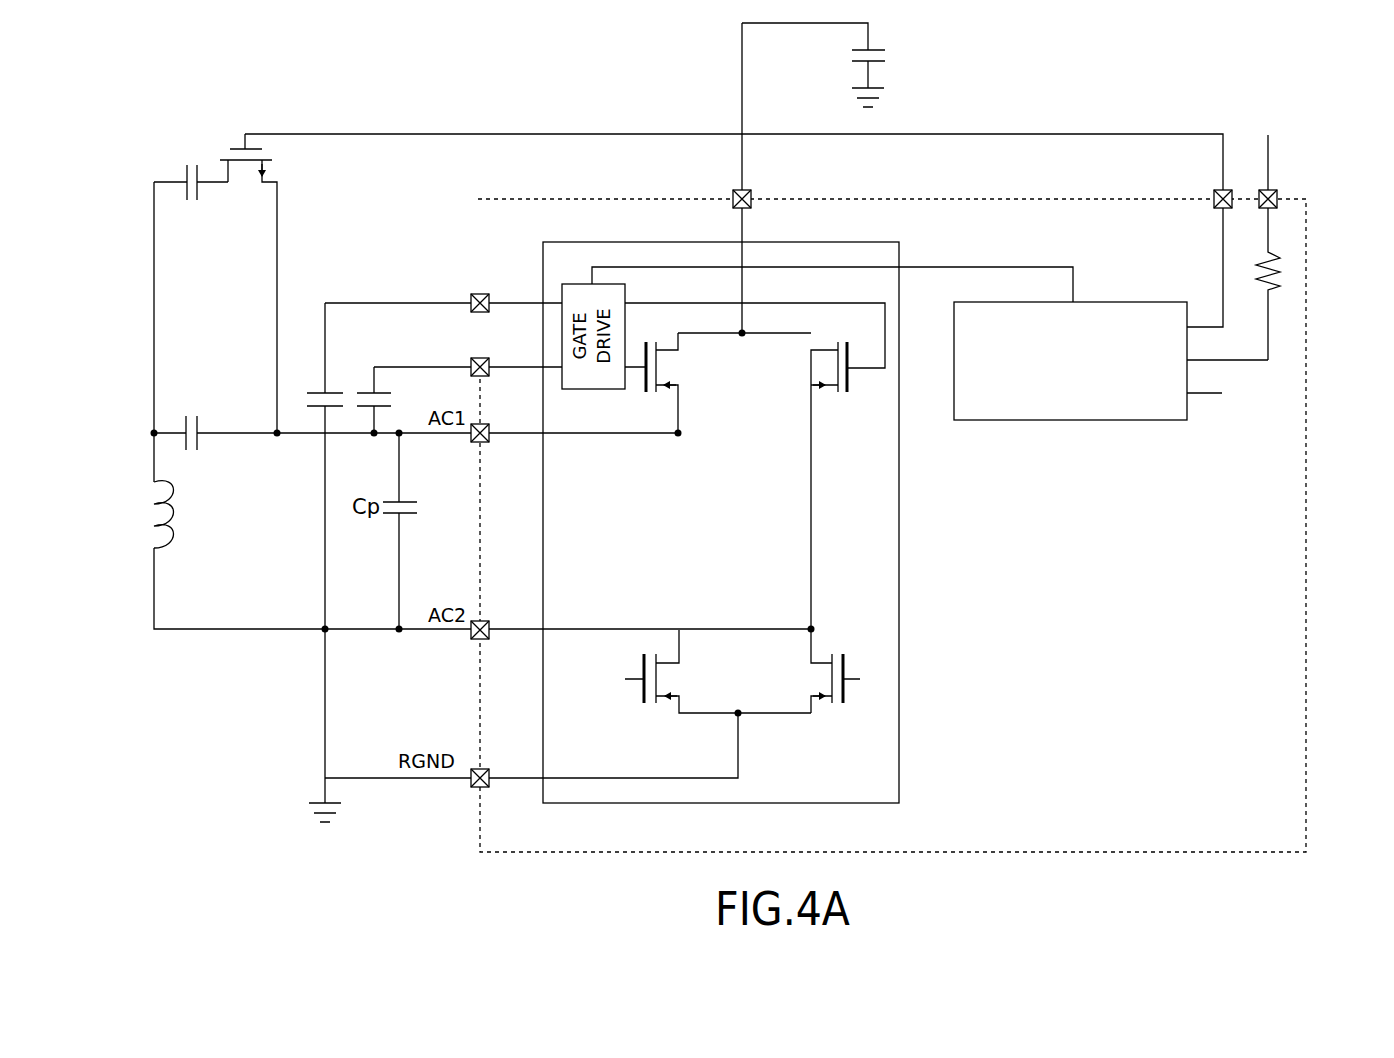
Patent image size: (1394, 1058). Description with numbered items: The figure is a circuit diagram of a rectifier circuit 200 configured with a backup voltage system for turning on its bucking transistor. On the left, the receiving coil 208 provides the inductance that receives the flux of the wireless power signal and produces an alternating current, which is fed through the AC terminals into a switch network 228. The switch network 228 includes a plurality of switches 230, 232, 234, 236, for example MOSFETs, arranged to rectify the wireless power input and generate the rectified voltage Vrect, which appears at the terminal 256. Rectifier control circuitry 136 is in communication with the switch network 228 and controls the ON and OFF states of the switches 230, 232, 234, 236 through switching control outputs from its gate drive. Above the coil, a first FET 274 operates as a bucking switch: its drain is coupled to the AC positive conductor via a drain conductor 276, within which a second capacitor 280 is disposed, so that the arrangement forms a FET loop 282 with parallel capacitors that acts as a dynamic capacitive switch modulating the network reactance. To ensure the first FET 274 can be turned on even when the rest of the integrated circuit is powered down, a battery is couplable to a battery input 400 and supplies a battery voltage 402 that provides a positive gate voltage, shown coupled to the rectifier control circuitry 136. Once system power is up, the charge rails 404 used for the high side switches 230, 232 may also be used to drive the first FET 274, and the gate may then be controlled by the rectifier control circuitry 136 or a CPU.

The rectifier circuit 200 is at (221, 74).
The first FET 274 is at (234, 132).
The second capacitor 280 is at (180, 161).
The drain conductor 276 is at (151, 199).
The FET loop 282 is at (416, 375).
The receiving coil 208 is at (130, 508).
The VRECT terminal 256 is at (809, 178).
The charge rails 404 is at (846, 261).
The battery input 400 is at (1252, 156).
The battery voltage 402 is at (1317, 247).
The rectifier control circuitry 136 is at (1116, 321).
The switch network 228 is at (721, 522).
The switch 230 is at (655, 383).
The switch 232 is at (834, 485).
The switch 234 is at (718, 681).
The switch 236 is at (835, 681).